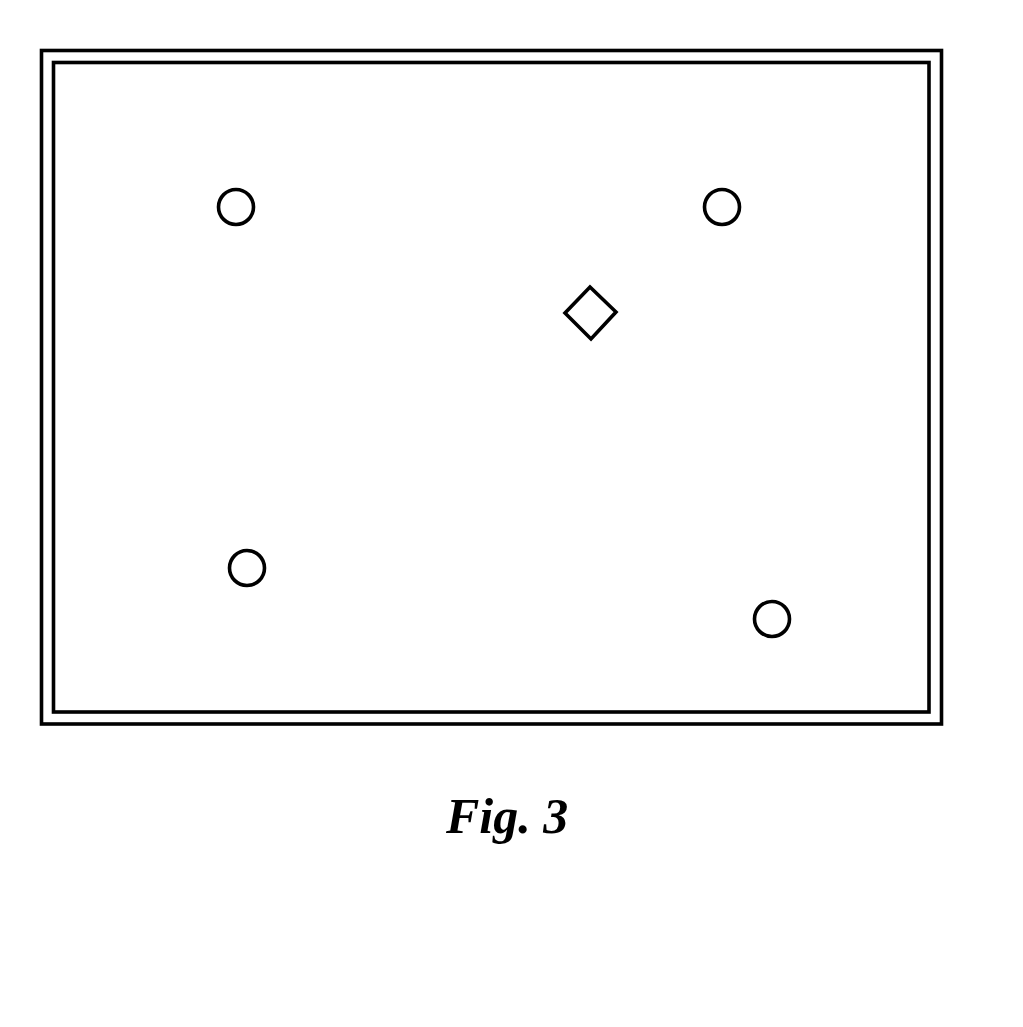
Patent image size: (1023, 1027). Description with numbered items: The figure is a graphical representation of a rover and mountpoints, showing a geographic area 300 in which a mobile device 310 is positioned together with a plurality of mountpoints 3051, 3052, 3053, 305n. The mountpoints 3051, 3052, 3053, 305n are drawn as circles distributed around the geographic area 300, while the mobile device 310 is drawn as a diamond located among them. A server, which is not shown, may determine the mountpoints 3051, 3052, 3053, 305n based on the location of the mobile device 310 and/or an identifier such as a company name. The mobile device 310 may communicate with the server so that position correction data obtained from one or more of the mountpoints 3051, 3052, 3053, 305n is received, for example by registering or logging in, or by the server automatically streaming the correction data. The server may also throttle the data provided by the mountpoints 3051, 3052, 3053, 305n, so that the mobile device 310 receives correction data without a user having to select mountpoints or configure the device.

The geographic area 300 is at (941, 50).
The mountpoint 3051 is at (253, 201).
The mountpoint 3052 is at (739, 201).
The mountpoint 3053 is at (264, 562).
The mountpoint 305n is at (789, 613).
The mobile device 310 is at (605, 299).